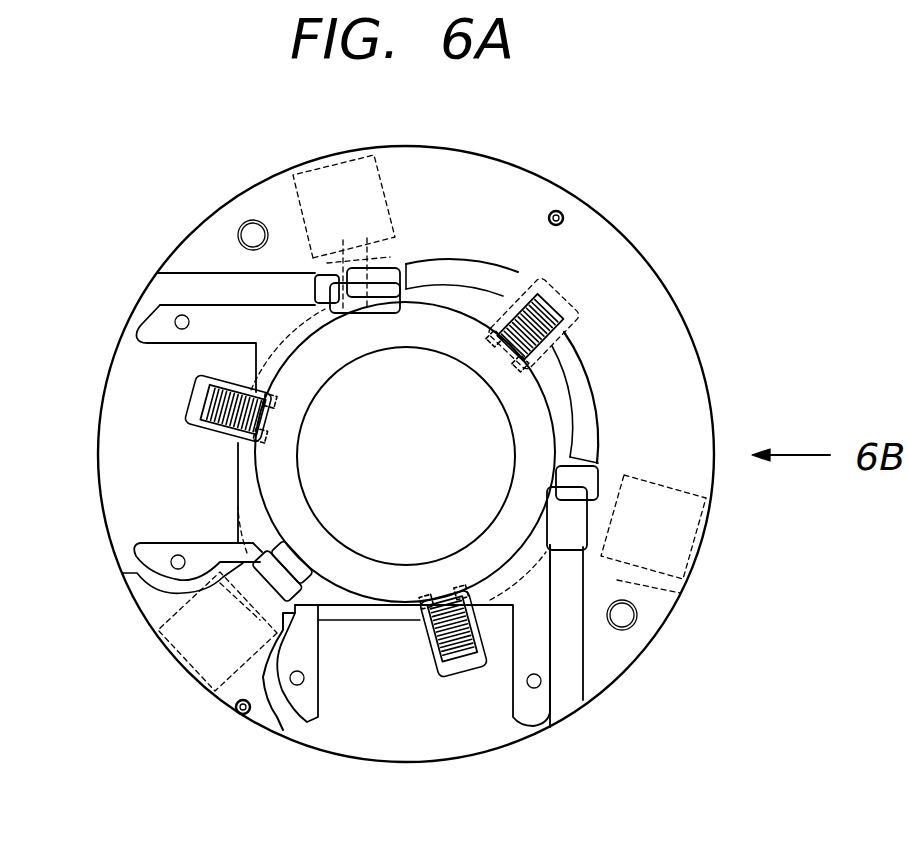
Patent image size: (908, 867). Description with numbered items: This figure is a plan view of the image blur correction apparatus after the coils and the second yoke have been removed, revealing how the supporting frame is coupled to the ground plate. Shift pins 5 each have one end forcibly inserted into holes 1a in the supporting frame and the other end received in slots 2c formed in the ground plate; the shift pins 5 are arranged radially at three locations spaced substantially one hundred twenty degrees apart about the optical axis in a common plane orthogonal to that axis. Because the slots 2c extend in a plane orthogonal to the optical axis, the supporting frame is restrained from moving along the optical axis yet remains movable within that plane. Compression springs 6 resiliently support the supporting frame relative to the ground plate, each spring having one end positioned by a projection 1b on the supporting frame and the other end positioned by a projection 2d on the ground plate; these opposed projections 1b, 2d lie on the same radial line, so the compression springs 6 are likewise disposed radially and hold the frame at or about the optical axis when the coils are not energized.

The holes 1a is at (563, 548).
The projection 1b is at (583, 385).
The slots 2c is at (657, 587).
The projection 2d is at (562, 287).
The shift pins 5 is at (597, 463).
The compression springs 6 is at (562, 341).